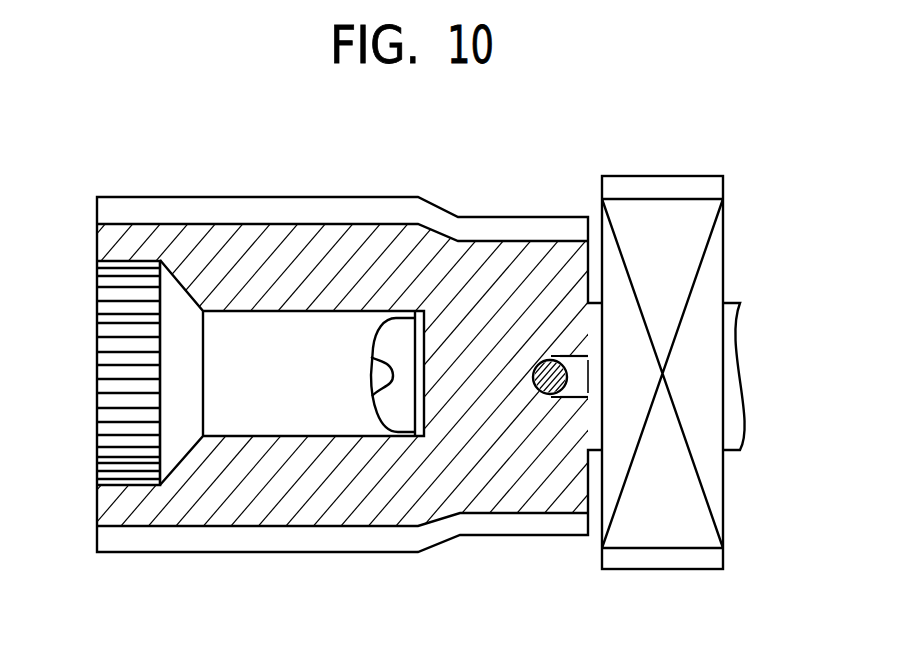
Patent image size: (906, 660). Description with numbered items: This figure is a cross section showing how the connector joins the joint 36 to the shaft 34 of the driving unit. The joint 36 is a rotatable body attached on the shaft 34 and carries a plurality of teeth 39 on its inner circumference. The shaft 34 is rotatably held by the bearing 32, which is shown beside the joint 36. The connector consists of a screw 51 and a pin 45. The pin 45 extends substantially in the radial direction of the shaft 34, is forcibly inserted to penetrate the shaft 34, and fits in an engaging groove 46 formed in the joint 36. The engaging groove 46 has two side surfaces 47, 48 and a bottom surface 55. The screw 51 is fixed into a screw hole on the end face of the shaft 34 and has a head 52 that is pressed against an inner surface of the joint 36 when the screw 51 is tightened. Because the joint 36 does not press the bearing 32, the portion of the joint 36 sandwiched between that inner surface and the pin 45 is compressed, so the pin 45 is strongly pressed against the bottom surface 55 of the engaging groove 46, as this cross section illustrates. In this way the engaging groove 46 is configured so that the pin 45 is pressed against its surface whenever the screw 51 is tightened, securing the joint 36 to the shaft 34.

The bearing 32 is at (727, 265).
The shaft 34 is at (736, 342).
The joint 36 is at (318, 553).
The teeth 39 is at (115, 287).
The pin 45 is at (548, 400).
The engaging groove 46 is at (580, 375).
The side surface 47 is at (585, 397).
The side surface 48 is at (588, 358).
The screw 51 is at (372, 348).
The head 52 is at (385, 405).
The bottom surface 55 is at (542, 390).